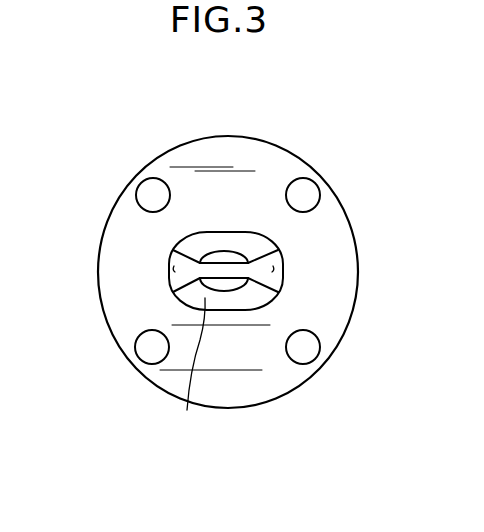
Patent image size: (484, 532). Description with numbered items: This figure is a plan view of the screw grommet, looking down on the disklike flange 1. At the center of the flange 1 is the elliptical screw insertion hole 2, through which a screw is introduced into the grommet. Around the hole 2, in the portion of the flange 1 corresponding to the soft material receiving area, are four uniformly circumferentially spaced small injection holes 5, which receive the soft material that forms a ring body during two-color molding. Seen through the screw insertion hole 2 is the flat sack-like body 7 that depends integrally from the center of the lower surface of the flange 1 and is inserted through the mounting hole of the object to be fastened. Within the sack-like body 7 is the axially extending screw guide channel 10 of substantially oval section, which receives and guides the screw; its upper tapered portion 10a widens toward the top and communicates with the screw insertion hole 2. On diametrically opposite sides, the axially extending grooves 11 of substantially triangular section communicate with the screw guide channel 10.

The disklike flange 1 is at (282, 143).
The screw insertion hole 2 is at (198, 247).
The small injection holes 5 is at (146, 190).
The sack-like body 7 is at (108, 157).
The screw guide channel 10 is at (223, 285).
The upper tapered portion 10a is at (223, 240).
The groove 11 is at (173, 272).